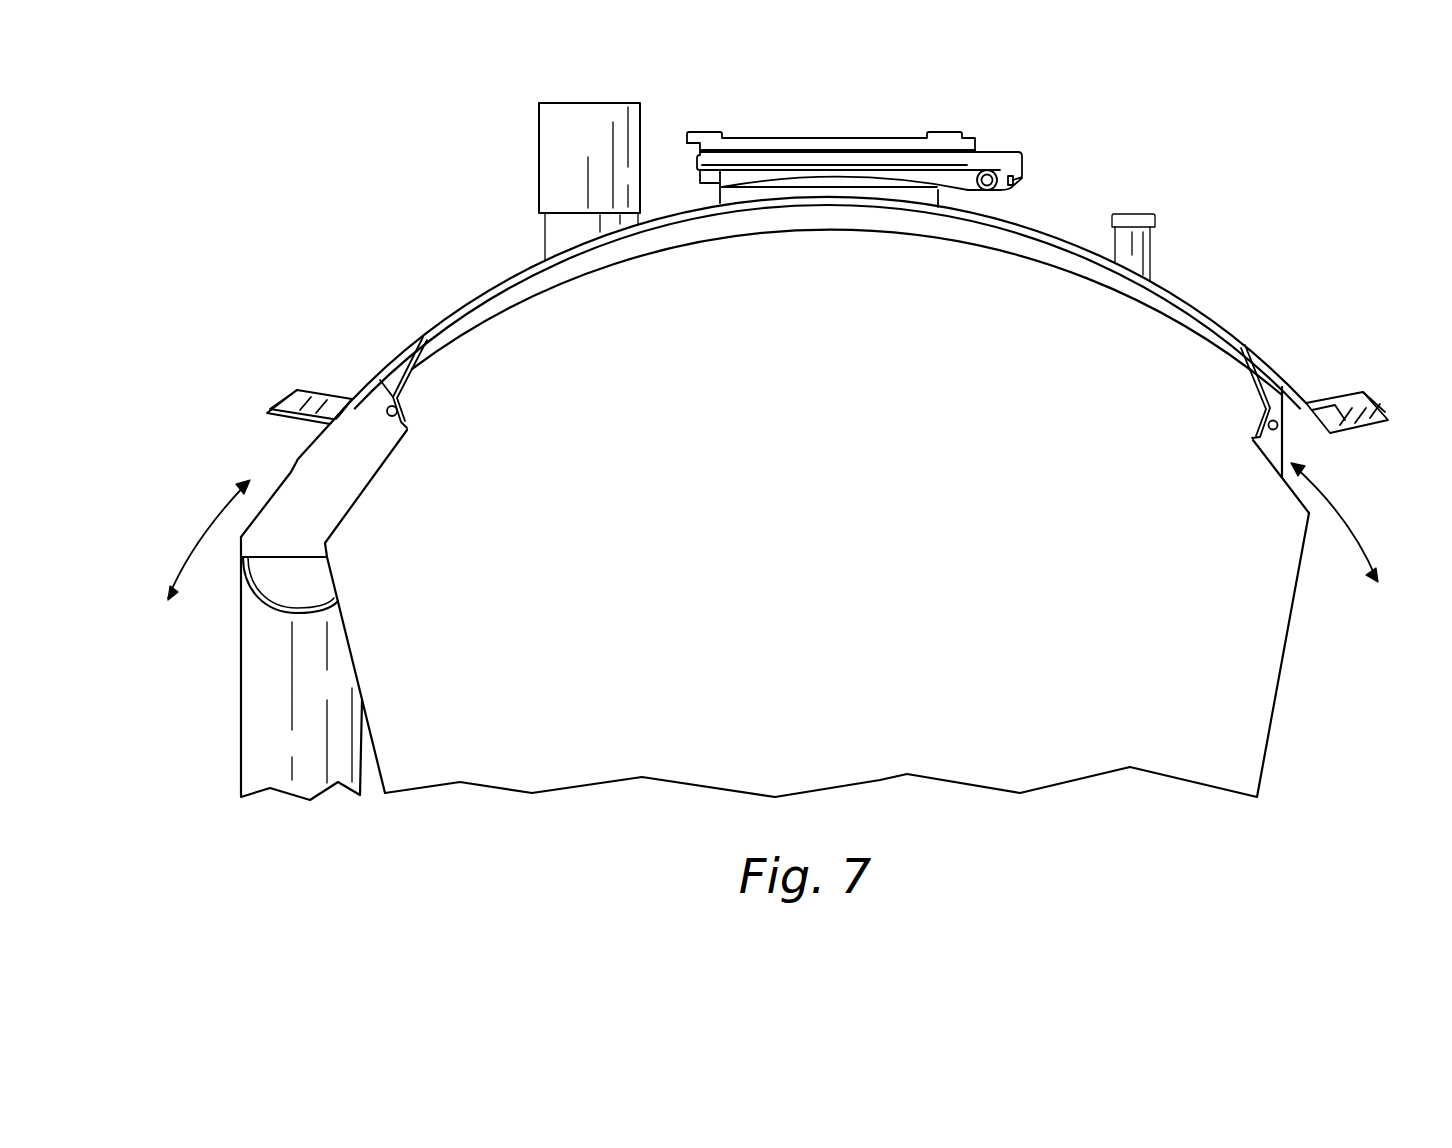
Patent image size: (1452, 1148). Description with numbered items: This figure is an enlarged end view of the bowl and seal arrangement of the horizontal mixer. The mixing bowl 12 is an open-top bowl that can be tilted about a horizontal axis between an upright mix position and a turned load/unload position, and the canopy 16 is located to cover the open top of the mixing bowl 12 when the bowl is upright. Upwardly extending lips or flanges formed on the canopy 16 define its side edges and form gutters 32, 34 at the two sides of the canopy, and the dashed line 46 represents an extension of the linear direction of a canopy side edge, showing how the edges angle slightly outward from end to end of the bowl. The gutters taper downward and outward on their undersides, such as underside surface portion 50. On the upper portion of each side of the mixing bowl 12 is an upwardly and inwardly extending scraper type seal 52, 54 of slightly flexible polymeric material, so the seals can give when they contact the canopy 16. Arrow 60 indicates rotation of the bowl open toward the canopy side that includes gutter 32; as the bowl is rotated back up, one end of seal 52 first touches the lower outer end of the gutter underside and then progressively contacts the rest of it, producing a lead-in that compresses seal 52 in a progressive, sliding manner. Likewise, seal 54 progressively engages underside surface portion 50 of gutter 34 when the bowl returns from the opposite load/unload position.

The mixing bowl 12 is at (655, 625).
The canopy 16 is at (518, 273).
The gutter 32 is at (1313, 402).
The gutter 34 is at (345, 395).
The dashed line 46 is at (1360, 430).
The underside surface portion 50 is at (290, 421).
The scraper type seal 52 is at (203, 536).
The scraper type seal 54 is at (420, 357).
The arrow 60 is at (1343, 520).